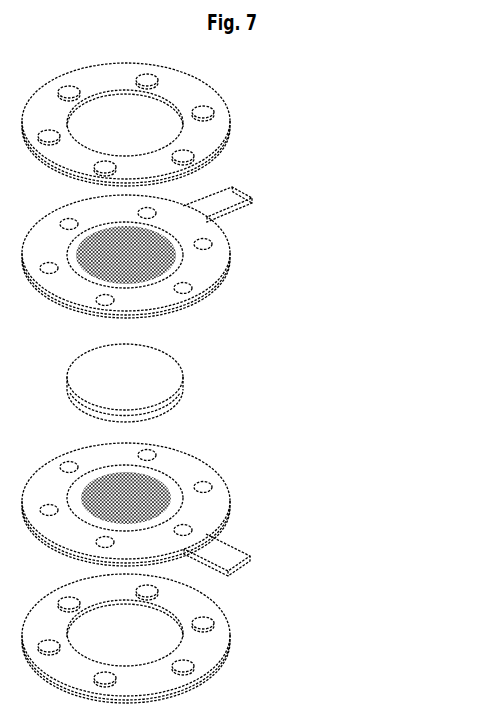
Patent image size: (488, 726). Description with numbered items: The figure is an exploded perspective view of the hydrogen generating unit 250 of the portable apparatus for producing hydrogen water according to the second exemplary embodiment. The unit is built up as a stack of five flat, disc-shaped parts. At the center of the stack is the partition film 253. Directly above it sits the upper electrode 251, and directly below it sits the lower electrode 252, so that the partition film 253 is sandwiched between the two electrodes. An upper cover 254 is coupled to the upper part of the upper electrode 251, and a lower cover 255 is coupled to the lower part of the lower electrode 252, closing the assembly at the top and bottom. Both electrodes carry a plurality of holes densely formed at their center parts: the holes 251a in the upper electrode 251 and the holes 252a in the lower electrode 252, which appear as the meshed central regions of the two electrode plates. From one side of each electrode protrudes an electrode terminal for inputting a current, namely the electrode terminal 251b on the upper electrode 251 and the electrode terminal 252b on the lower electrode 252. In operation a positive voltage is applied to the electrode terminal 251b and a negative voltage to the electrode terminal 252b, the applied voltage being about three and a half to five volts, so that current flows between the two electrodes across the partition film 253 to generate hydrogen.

The hydrogen generating unit 250 is at (293, 169).
The upper cover 254 is at (208, 132).
The upper electrode 251 is at (201, 252).
The holes 251a is at (178, 241).
The electrode terminal 251b is at (250, 194).
The partition film 253 is at (168, 378).
The lower electrode 252 is at (196, 506).
The holes 252a is at (163, 484).
The electrode terminal 252b is at (250, 556).
The lower cover 255 is at (217, 642).